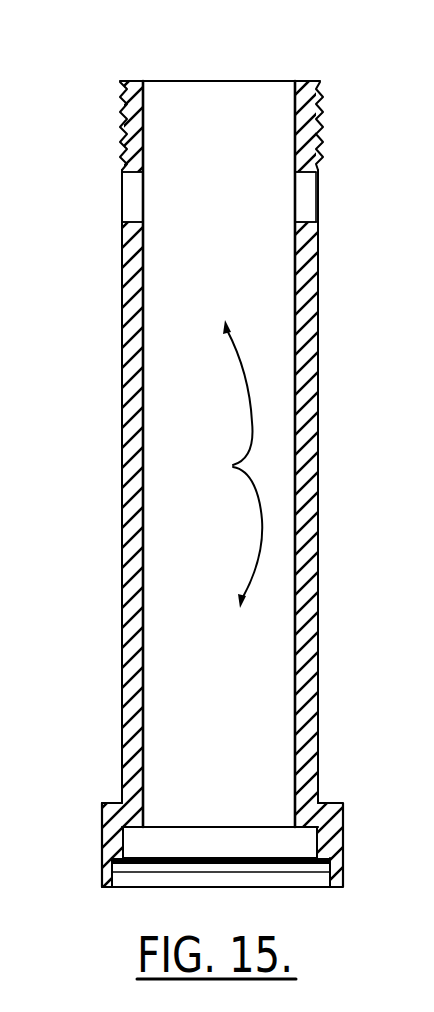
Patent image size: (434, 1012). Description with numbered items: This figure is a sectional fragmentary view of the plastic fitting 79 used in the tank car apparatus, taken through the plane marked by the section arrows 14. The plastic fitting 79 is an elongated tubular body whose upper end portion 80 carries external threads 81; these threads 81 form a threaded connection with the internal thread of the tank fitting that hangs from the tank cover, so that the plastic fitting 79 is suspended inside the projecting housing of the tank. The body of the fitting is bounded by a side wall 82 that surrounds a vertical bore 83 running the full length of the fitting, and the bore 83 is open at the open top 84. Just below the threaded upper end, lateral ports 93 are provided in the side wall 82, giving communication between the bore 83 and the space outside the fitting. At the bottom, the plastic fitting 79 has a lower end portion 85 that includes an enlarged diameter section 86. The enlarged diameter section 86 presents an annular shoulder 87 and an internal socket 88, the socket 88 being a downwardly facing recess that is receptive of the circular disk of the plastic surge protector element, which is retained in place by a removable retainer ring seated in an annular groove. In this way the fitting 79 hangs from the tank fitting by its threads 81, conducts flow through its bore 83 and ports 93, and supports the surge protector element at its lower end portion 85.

The section line of FIG. 14 is at (97, 195).
The plastic fitting 79 is at (318, 483).
The upper end portion 80 is at (308, 80).
The external threads 81 is at (318, 123).
The side wall 82 is at (123, 492).
The vertical bore 83 is at (229, 464).
The open top 84 is at (185, 79).
The lower end portion 85 is at (345, 848).
The enlarged diameter section 86 is at (103, 857).
The annular shoulder 87 is at (326, 802).
The internal socket 88 is at (284, 886).
The lateral ports 93 is at (128, 192).